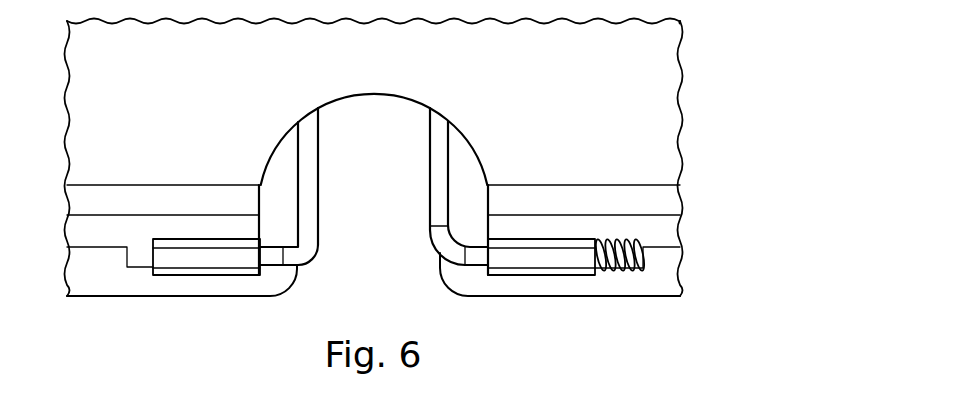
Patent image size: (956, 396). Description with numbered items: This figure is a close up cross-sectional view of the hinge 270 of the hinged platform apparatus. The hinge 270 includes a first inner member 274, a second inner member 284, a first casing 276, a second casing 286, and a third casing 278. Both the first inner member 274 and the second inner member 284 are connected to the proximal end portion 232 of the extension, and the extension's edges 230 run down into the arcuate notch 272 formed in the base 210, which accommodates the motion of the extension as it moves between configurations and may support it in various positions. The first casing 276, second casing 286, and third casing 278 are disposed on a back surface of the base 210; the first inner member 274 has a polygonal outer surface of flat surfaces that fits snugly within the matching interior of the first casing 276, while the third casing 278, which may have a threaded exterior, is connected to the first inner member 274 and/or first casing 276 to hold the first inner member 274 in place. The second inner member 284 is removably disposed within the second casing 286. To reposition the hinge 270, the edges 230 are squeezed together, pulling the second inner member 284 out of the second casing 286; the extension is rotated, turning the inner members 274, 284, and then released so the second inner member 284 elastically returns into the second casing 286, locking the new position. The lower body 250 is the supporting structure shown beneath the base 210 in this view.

The base 210 is at (683, 127).
The edges 230 is at (310, 121).
The proximal end portion 232 is at (438, 121).
The notch 272 is at (372, 96).
The second substrate 250 is at (683, 272).
The hinge 270 is at (694, 310).
The first inner member 274 is at (473, 258).
The first casing 276 is at (543, 262).
The third casing 278 is at (627, 273).
The second inner member 284 is at (268, 256).
The second casing 286 is at (202, 259).